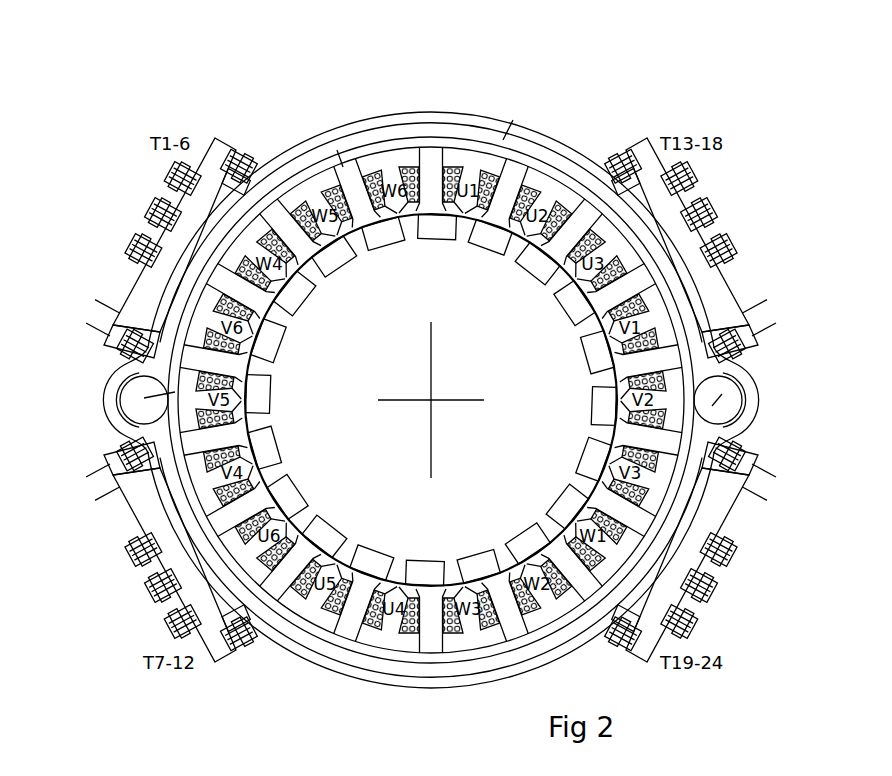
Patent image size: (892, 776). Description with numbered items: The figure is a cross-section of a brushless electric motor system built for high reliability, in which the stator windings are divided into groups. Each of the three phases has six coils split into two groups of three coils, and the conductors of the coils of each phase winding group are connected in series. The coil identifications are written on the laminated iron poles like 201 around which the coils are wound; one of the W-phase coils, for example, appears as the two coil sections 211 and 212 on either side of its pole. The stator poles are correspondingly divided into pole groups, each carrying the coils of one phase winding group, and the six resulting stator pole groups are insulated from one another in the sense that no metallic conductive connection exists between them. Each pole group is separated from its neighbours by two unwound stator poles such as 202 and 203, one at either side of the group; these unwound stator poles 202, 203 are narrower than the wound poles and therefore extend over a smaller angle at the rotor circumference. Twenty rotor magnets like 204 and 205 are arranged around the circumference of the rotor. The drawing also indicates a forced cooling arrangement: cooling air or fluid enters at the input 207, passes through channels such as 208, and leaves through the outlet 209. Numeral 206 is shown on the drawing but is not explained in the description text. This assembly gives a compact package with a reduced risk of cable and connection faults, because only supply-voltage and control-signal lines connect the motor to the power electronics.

The laminated iron pole 201 is at (431, 395).
The unwound stator pole 202 is at (305, 449).
The unwound stator pole 203 is at (441, 541).
The rotor magnet 204 is at (456, 270).
The rotor magnet 205 is at (431, 400).
The terminal block 206 is at (689, 229).
The input 207 is at (431, 400).
The channel 208 is at (431, 385).
The outlet 209 is at (756, 400).
The coil section 211 is at (273, 422).
The coil section 212 is at (283, 290).